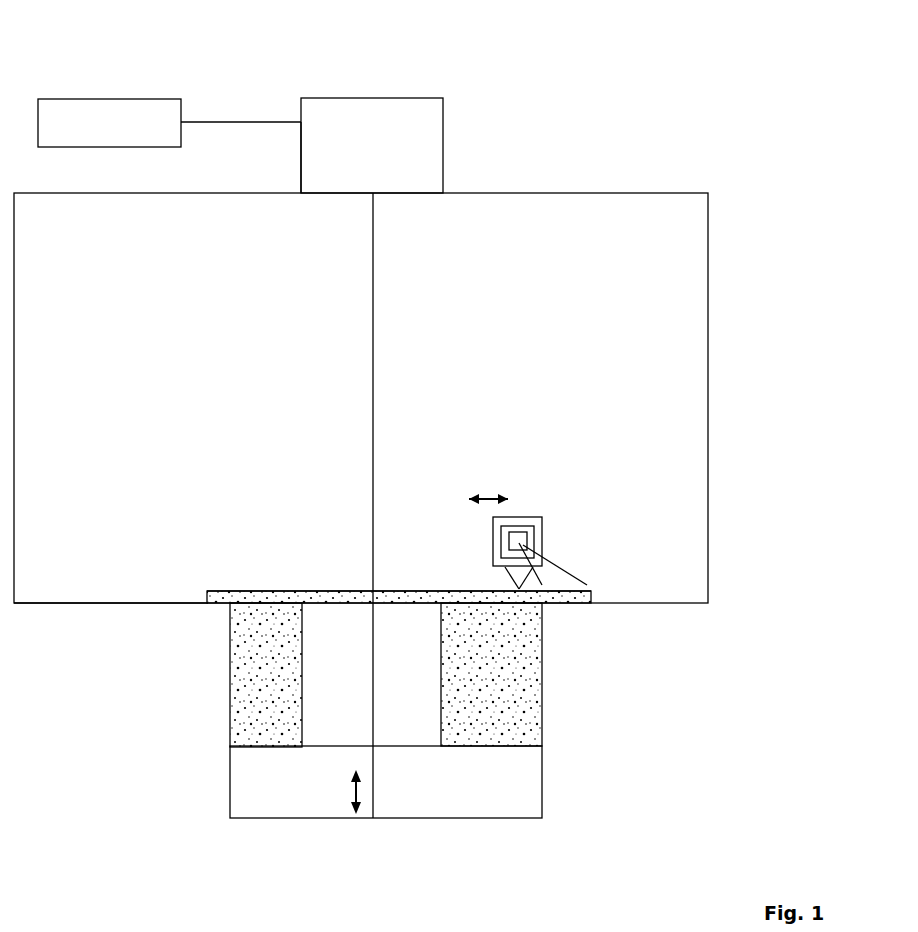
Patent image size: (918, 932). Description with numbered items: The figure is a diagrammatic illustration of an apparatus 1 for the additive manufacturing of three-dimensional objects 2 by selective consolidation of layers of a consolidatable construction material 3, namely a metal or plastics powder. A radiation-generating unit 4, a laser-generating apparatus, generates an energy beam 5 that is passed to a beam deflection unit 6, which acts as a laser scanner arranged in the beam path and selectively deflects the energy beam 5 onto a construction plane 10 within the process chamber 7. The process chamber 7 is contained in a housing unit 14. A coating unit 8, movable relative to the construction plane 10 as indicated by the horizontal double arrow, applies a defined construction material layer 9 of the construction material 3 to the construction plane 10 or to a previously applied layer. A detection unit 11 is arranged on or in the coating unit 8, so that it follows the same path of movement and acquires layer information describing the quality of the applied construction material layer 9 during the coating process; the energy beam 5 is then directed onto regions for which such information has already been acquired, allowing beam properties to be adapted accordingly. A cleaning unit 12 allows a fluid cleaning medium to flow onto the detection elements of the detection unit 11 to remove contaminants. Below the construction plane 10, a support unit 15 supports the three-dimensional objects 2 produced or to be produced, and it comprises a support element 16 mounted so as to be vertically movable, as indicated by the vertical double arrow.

The apparatus 1 is at (658, 148).
The three-dimensional object 2 is at (442, 705).
The consolidatable construction material 3 is at (263, 685).
The radiation-generating unit 4 is at (94, 135).
The energy beam 5 is at (236, 122).
The beam deflection unit 6 is at (410, 133).
The process chamber 7 is at (166, 354).
The coating unit 8 is at (540, 542).
The construction material layer 9 is at (357, 590).
The construction plane 10 is at (250, 574).
The detection unit 11 is at (518, 537).
The cleaning unit 12 is at (510, 523).
The housing unit 14 is at (709, 333).
The support unit 15 is at (320, 768).
The support element 16 is at (407, 748).